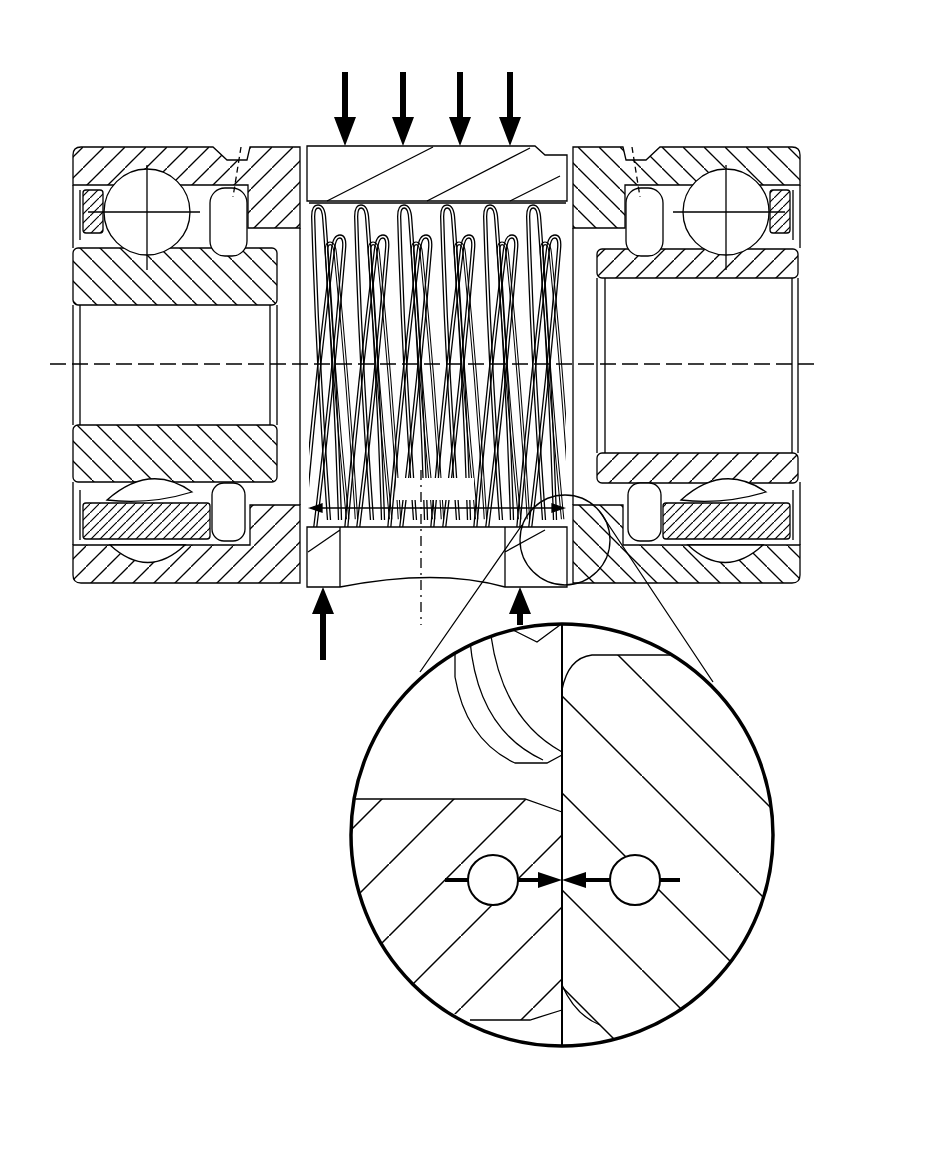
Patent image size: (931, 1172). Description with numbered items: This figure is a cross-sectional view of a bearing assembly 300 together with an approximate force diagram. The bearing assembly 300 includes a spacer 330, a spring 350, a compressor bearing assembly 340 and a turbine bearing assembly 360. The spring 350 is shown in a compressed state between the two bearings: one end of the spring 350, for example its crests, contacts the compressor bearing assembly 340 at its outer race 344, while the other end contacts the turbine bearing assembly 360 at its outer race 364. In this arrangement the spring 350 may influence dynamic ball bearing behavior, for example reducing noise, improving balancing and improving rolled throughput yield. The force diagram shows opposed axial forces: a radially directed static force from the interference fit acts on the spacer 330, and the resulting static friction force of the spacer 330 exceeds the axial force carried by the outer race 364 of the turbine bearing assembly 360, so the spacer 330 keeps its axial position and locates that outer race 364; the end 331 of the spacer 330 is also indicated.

The bearing assembly 300 is at (199, 68).
The spacer 330 is at (342, 51).
The spacer body 331 is at (320, 147).
The compressor bearing assembly 340 is at (130, 120).
The outer race 344 is at (290, 147).
The spring 350 is at (560, 290).
The turbine bearing assembly 360 is at (729, 120).
The outer race 364 is at (580, 148).